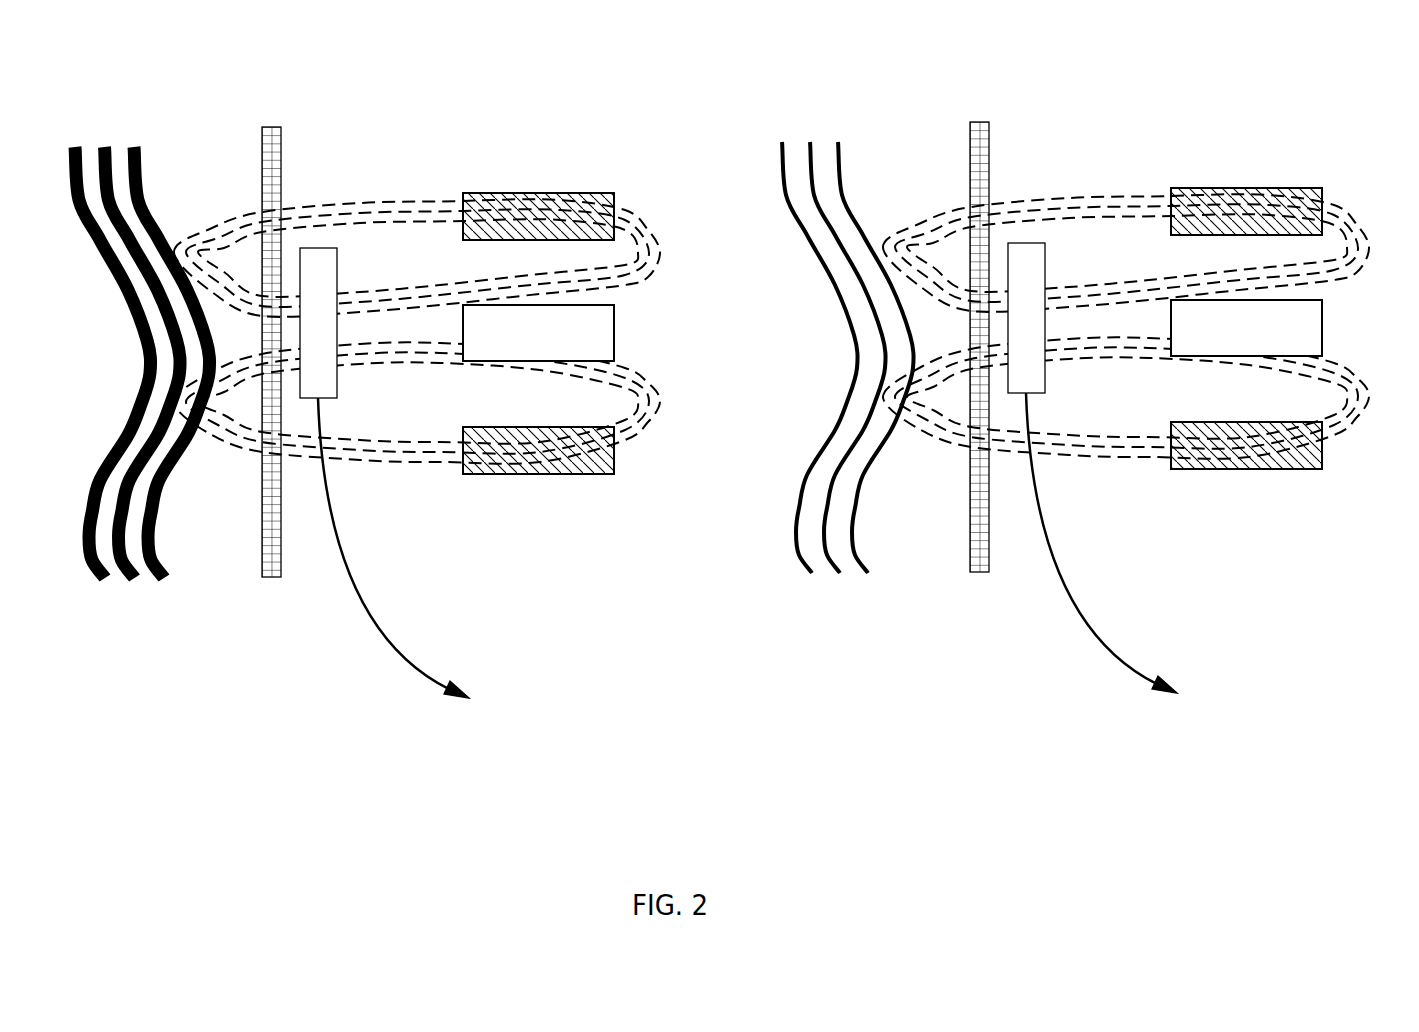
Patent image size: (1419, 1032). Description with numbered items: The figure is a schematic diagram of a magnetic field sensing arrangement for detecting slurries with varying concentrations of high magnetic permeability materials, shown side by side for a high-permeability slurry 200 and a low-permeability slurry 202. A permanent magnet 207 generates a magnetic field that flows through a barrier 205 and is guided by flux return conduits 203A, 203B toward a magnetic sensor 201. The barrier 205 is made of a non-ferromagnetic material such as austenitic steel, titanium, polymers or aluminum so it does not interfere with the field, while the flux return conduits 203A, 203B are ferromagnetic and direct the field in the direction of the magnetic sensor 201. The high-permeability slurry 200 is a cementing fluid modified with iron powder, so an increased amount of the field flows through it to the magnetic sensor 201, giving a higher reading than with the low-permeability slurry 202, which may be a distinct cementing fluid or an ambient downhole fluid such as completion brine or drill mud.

The high-permeability slurry 200 is at (124, 311).
The low-permeability slurry 202 is at (826, 309).
The barrier 205 is at (980, 122).
The magnetic sensor 201 is at (1034, 198).
The flux return conduit 203A is at (1253, 149).
The flux return conduit 203B is at (529, 474).
The permanent magnet 207 is at (614, 332).